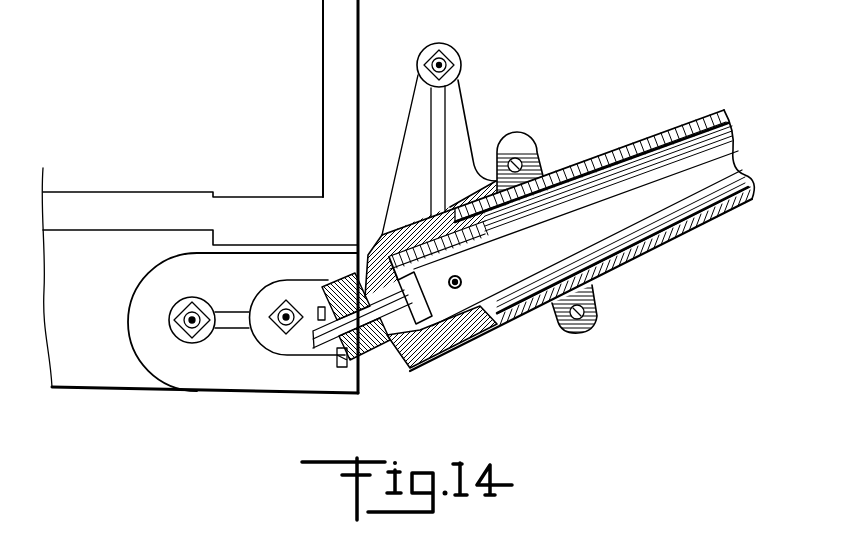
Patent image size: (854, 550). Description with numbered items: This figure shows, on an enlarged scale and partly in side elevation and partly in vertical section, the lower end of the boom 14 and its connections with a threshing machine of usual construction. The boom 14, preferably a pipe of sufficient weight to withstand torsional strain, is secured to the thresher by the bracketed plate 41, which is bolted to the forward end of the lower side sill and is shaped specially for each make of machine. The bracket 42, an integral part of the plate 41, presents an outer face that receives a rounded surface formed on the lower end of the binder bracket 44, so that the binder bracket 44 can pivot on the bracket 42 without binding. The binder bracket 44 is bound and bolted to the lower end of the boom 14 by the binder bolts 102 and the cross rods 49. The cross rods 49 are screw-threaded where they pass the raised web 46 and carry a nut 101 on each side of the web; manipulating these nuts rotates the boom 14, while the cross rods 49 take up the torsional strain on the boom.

The boom 14 is at (675, 237).
The bracketed plate 41 is at (260, 375).
The bracket 42 is at (373, 365).
The binder bracket 44 is at (460, 133).
The raised web 46 is at (431, 166).
The cross rods 49 is at (470, 284).
The nut 101 is at (457, 63).
The binder bolts 102 is at (609, 312).